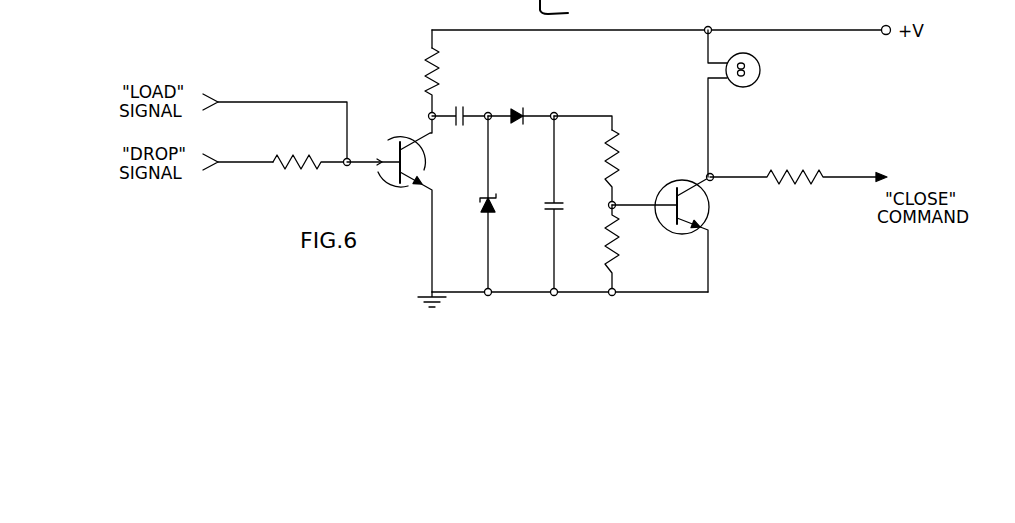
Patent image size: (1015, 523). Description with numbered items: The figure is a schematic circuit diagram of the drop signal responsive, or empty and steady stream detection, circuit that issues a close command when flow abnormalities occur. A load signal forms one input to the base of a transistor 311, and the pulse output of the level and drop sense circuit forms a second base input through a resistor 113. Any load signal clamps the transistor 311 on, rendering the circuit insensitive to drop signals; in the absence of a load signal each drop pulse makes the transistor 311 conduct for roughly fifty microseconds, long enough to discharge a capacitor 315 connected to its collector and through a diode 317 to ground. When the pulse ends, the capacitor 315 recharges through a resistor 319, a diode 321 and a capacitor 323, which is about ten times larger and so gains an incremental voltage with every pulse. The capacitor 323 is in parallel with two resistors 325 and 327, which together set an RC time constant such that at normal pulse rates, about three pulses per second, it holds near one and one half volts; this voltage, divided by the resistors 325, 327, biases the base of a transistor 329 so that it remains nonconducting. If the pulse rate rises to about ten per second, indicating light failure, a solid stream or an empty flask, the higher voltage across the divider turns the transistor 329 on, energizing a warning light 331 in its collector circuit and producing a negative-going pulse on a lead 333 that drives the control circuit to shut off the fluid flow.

The resistor 113 is at (308, 152).
The transistor 311 is at (408, 139).
The capacitor 315 is at (460, 104).
The diode 317 is at (480, 206).
The resistor 319 is at (440, 70).
The diode 321 is at (520, 106).
The capacitor 323 is at (542, 203).
The resistor 325 is at (622, 157).
The resistor 327 is at (621, 243).
The transistor 329 is at (670, 232).
The warning light 331 is at (741, 88).
The lead 333 is at (846, 176).